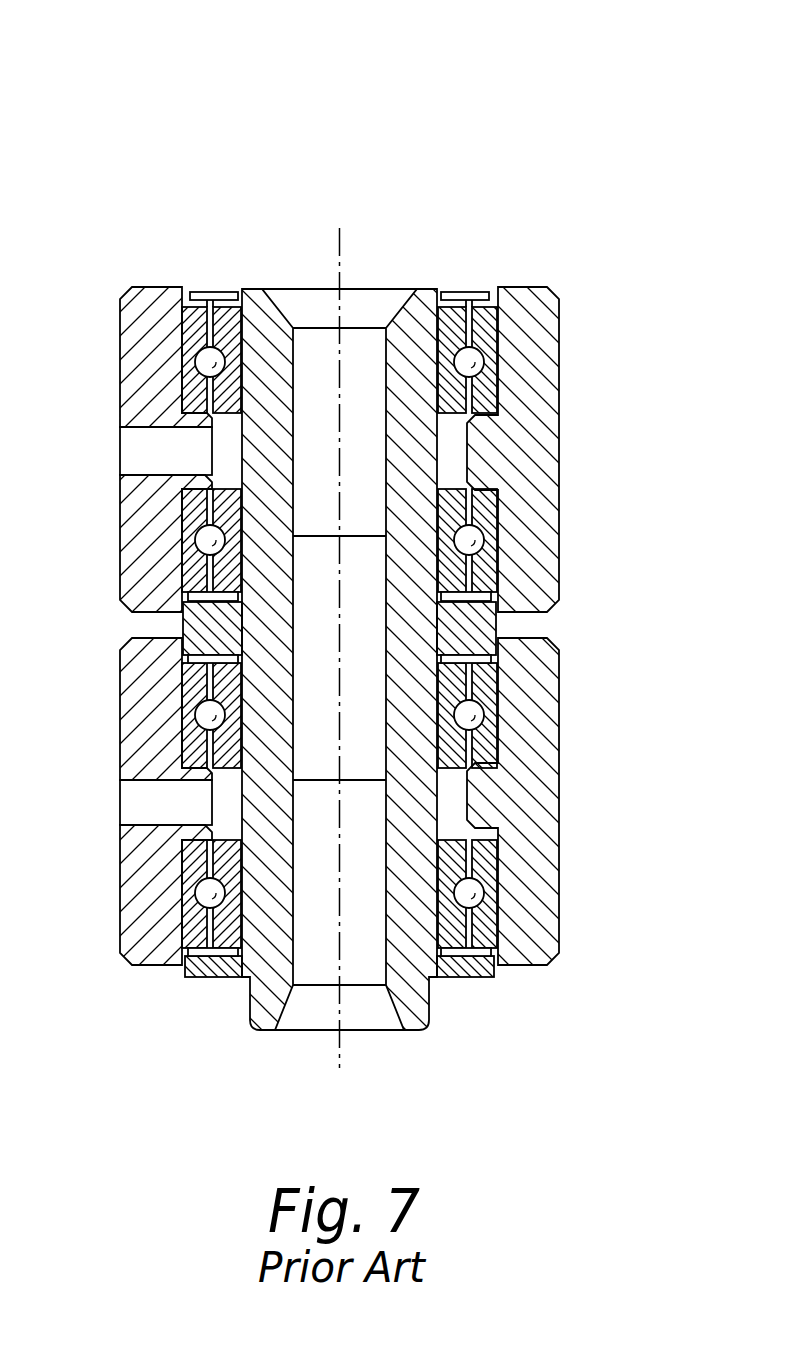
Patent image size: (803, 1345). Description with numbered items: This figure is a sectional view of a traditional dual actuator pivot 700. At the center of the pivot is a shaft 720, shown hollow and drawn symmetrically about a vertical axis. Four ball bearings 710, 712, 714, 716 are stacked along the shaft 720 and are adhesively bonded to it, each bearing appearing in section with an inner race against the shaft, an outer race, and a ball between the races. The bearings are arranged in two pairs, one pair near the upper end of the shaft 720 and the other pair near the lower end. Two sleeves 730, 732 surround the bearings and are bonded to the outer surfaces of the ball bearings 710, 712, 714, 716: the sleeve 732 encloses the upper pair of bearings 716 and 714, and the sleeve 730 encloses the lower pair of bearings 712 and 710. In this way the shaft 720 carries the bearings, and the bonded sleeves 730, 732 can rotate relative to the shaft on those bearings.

The dual actuator pivot 700 is at (118, 70).
The ball bearing 710 is at (490, 866).
The ball bearing 712 is at (488, 673).
The ball bearing 714 is at (488, 513).
The ball bearing 716 is at (488, 333).
The shaft 720 is at (431, 1000).
The sleeve 730 is at (577, 723).
The sleeve 732 is at (577, 398).